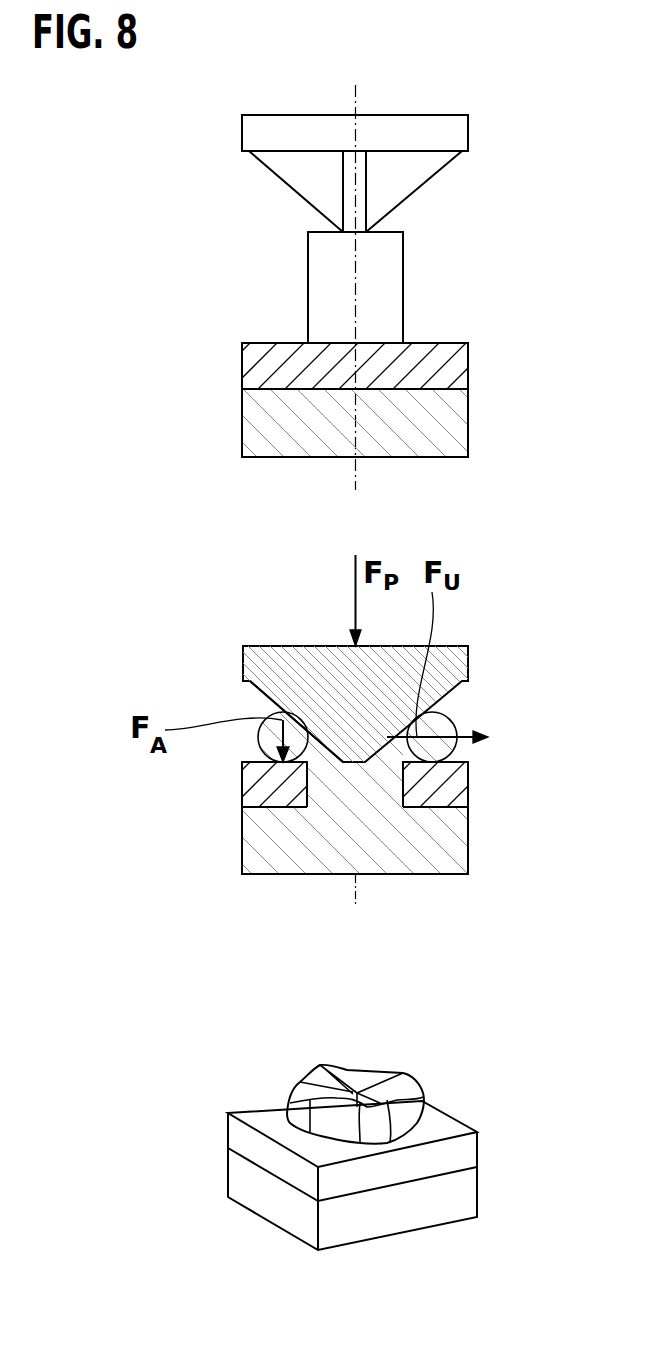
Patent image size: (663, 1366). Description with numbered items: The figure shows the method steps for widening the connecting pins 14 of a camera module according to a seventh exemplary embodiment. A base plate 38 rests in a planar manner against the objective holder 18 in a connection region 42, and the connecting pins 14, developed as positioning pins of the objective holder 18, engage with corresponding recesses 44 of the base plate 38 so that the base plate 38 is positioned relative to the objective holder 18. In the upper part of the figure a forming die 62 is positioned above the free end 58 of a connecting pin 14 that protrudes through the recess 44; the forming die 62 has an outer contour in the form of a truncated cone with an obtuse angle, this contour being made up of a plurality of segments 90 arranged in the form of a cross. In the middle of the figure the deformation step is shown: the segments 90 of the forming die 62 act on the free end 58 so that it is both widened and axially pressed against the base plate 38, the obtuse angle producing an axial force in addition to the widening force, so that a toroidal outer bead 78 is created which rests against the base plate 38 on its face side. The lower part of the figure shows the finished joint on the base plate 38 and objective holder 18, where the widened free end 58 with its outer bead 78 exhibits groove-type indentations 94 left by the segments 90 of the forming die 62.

The connecting pin 14 is at (317, 280).
The objective holder 18 is at (257, 427).
The base plate 38 is at (447, 365).
The connection region 42 is at (447, 389).
The recess 44 is at (397, 782).
The free end 58 is at (387, 230).
The forming die 62 is at (260, 133).
The toroidal outer bead 78 is at (448, 725).
The segment 90 is at (350, 195).
The groove-type indentation 94 is at (337, 1085).